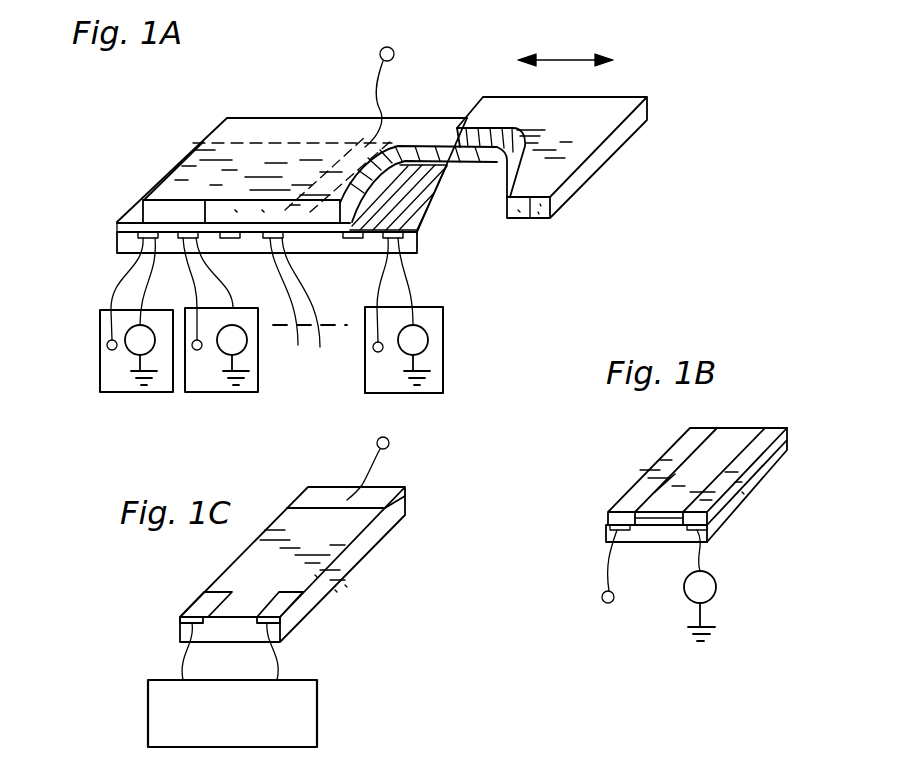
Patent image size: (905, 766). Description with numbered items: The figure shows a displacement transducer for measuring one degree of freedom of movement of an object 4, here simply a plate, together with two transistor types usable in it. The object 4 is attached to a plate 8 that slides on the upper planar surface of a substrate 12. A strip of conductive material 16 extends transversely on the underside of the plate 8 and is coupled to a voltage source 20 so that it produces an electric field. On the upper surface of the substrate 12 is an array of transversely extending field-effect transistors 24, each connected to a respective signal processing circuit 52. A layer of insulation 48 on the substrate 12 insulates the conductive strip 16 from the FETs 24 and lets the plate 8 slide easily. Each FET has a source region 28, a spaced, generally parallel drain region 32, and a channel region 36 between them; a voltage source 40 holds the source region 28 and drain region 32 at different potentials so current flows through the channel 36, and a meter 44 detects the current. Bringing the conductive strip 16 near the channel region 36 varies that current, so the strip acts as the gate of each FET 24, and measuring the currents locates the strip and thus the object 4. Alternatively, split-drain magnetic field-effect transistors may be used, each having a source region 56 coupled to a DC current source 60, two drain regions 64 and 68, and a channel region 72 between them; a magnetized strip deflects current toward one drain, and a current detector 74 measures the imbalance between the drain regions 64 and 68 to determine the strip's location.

In FIG. 1A, the object 4 is at (610, 108).
In FIG. 1A, the plate 8 is at (236, 128).
In FIG. 1A, the substrate 12 is at (115, 243).
In FIG. 1B, the substrate 12 is at (718, 522).
In FIG. 1A, the strip of conductive material 16 is at (383, 144).
In FIG. 1A, the voltage source 20 is at (393, 49).
In FIG. 1A, the field-effect transistors 24 is at (308, 310).
In FIG. 1B, the source region 28 is at (663, 458).
In FIG. 1B, the drain region 32 is at (747, 463).
In FIG. 1B, the channel region 36 is at (737, 434).
In FIG. 1A, the voltage source 40 is at (107, 345).
In FIG. 1B, the voltage source 40 is at (610, 603).
In FIG. 1A, the meter 44 is at (155, 352).
In FIG. 1B, the meter 44 is at (717, 587).
In FIG. 1A, the layer of insulation 48 is at (115, 227).
In FIG. 1A, the signal processing circuit 52 is at (108, 393).
In FIG. 1C, the source region 56 is at (382, 492).
In FIG. 1C, the DC current source 60 is at (391, 443).
In FIG. 1C, the drain region 64 is at (203, 602).
In FIG. 1C, the drain region 68 is at (283, 600).
In FIG. 1C, the channel region 72 is at (330, 546).
In FIG. 1C, the current detector 74 is at (317, 703).